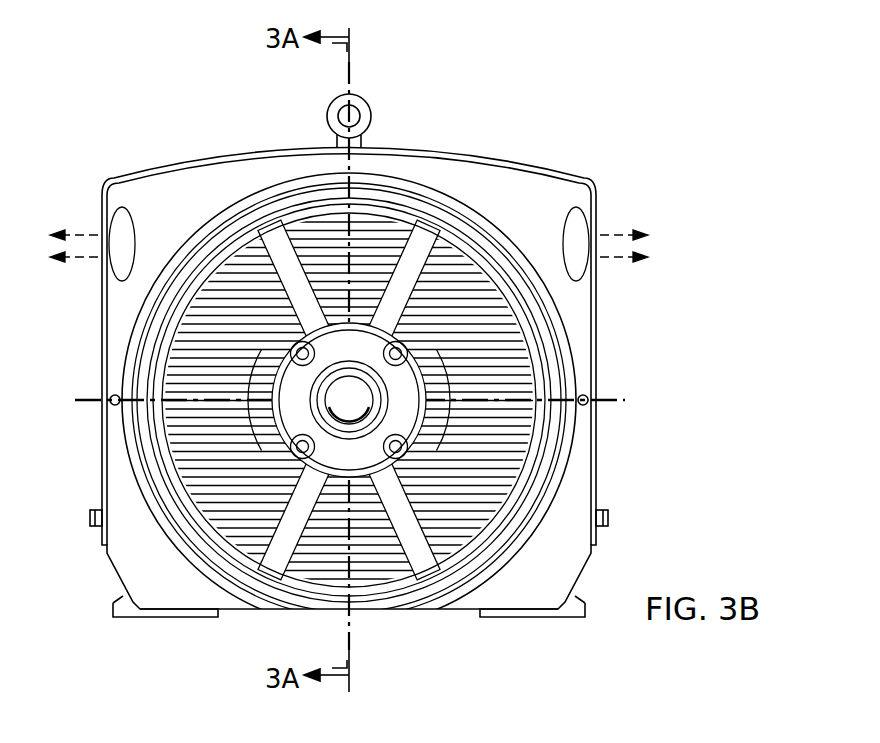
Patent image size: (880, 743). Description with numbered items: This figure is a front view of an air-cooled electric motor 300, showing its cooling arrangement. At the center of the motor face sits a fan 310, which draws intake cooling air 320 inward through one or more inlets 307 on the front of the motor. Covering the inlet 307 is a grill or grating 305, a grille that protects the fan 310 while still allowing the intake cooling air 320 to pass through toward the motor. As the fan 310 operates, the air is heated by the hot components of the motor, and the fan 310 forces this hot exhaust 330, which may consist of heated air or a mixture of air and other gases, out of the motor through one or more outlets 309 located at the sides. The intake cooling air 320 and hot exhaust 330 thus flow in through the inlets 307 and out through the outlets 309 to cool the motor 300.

The motor 300 is at (175, 165).
The grill or grating 305 is at (565, 463).
The inlet 307 is at (349, 400).
The outlet 309 is at (123, 272).
The fan 310 is at (528, 424).
The intake cooling air 320 is at (330, 255).
The hot exhaust 330 is at (83, 233).